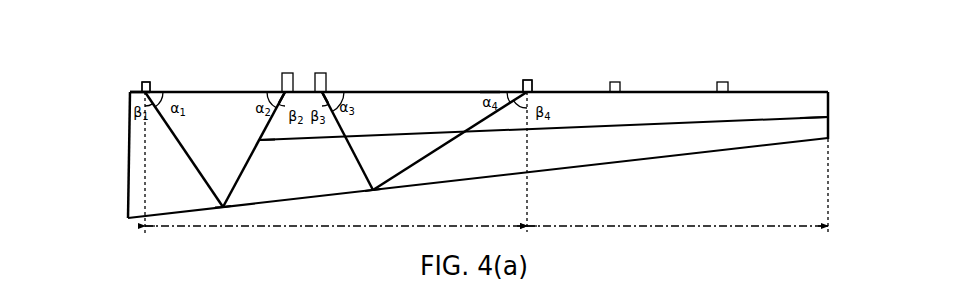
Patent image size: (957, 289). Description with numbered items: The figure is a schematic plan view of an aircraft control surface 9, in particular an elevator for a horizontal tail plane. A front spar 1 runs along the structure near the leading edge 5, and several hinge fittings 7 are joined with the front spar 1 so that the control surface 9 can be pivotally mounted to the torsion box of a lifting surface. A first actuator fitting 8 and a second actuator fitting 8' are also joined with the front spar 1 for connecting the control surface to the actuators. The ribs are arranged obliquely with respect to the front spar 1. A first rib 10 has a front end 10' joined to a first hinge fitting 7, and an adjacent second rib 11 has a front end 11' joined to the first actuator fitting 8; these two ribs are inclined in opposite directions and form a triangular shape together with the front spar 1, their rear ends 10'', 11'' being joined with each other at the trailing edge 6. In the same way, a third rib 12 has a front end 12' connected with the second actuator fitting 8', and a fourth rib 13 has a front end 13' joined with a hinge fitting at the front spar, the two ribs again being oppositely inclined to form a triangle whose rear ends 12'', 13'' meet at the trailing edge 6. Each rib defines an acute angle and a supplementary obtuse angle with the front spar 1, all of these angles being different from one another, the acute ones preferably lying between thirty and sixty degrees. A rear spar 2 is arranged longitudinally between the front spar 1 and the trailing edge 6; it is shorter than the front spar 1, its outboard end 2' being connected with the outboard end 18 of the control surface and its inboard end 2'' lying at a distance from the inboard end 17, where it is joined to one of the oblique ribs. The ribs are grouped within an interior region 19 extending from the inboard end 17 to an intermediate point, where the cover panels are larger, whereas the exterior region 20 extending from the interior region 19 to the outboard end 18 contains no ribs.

The front spar 1 is at (413, 91).
The rear spar 2 is at (543, 157).
The outboard end of rear spar 2' is at (835, 131).
The inboard end of rear spar 2'' is at (273, 154).
The leading edge 5 is at (490, 84).
The trailing edge 6 is at (665, 157).
The hinge fittings 7 is at (148, 82).
The first actuator fitting 8 is at (294, 65).
The second actuator fitting 8' is at (325, 65).
The control surface 9 is at (100, 78).
The first rib 10 is at (186, 122).
The front end of first rib 10' is at (126, 65).
The rear end of first rib 10'' is at (190, 193).
The second rib 11 is at (254, 122).
The front end of second rib 11' is at (272, 70).
The rear end of second rib 11'' is at (258, 192).
The third rib 12 is at (361, 114).
The front end of third rib 12' is at (346, 70).
The rear end of third rib 12'' is at (343, 175).
The fourth rib 13 is at (450, 141).
The front end of fourth rib 13' is at (529, 65).
The rear end of fourth rib 13'' is at (410, 200).
The inboard end 17 is at (127, 160).
The outboard end 18 is at (830, 103).
The interior region 19 is at (336, 215).
The exterior region 20 is at (677, 215).